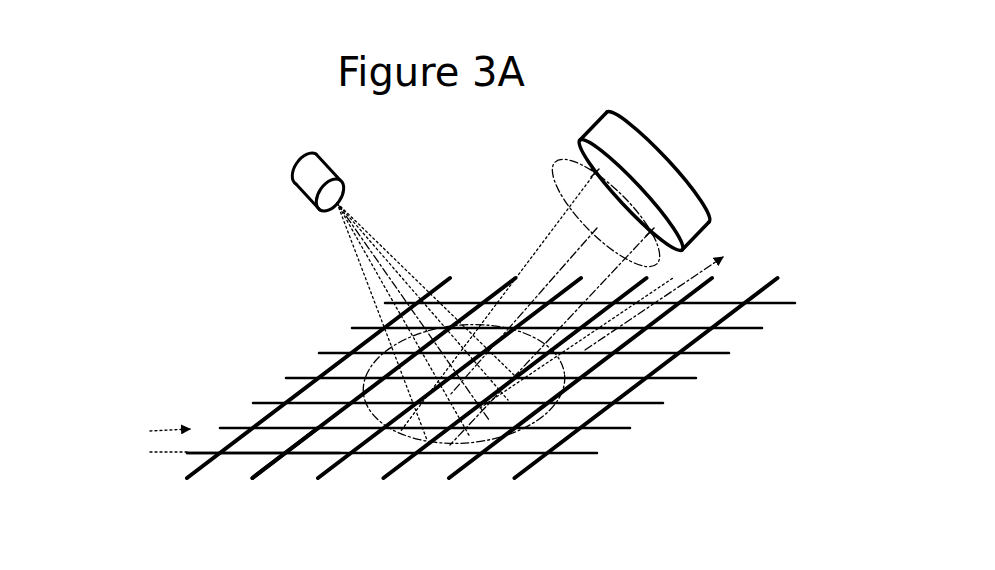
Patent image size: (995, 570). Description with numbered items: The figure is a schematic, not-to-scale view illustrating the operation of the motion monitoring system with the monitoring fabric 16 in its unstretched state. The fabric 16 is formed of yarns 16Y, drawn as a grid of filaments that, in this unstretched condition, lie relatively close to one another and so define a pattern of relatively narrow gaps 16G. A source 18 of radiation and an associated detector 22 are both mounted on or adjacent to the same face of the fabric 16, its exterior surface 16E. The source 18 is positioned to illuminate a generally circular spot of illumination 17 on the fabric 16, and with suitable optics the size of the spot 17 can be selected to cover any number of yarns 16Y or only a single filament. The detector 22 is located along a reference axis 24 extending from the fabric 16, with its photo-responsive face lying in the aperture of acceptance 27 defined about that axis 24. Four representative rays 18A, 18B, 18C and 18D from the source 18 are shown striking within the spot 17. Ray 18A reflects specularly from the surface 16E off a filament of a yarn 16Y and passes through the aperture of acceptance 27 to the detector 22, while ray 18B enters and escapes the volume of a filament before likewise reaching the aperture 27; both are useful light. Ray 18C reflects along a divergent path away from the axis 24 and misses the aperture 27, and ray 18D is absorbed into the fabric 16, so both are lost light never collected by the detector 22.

The monitoring fabric 16 is at (630, 448).
The exterior surface 16E is at (343, 383).
The gaps 16G is at (133, 439).
The yarns 16Y is at (317, 453).
The spot of illumination 17 is at (440, 443).
The source of radiation 18 is at (308, 187).
The ray 18A is at (408, 290).
The ray 18B is at (377, 273).
The ray 18C is at (380, 317).
The ray 18D is at (393, 250).
The detector 22 is at (620, 128).
The reference axis 24 is at (597, 228).
The aperture of acceptance 27 is at (560, 173).